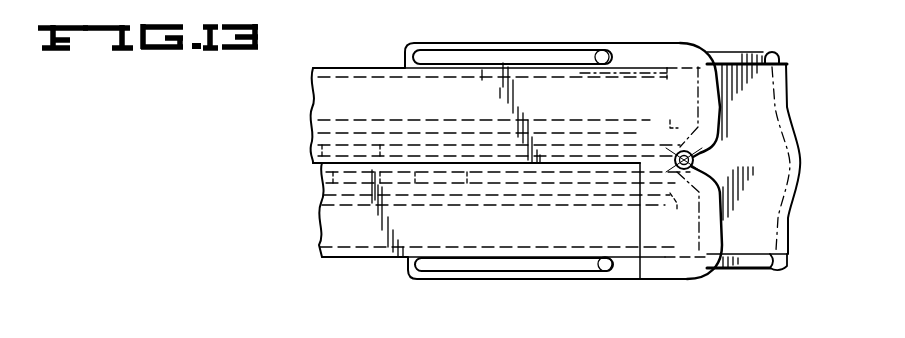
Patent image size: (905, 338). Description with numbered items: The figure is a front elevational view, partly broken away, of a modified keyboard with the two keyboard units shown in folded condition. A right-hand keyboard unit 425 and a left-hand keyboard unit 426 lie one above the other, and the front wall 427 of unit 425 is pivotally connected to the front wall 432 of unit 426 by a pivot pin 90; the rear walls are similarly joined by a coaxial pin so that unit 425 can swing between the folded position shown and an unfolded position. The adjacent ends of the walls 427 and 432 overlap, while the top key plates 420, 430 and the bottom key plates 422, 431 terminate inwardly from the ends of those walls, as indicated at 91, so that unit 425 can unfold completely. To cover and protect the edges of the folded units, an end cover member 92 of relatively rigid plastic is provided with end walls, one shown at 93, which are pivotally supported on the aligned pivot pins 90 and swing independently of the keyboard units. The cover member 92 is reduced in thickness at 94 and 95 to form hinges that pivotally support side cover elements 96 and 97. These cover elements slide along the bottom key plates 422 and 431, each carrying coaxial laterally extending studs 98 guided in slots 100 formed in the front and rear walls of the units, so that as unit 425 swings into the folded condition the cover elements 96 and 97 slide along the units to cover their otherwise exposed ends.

The right-hand keyboard unit 425 is at (382, 58).
The left-hand keyboard unit 426 is at (388, 258).
The front wall 427 is at (650, 52).
The front wall 432 is at (663, 263).
The slot 100 is at (512, 58).
The stud 98 is at (613, 39).
The top key plate 420 is at (648, 118).
The bottom key plate 422 is at (481, 73).
The top key plate 430 is at (577, 200).
The bottom key plate 431 is at (450, 243).
The key plate termination 91 is at (675, 218).
The pivot pin 90 is at (694, 157).
The end cover member 92 is at (799, 152).
The end wall 93 is at (753, 128).
The side cover element 97 is at (733, 52).
The hinge 95 is at (778, 56).
The side cover element 96 is at (725, 263).
The hinge 94 is at (779, 258).